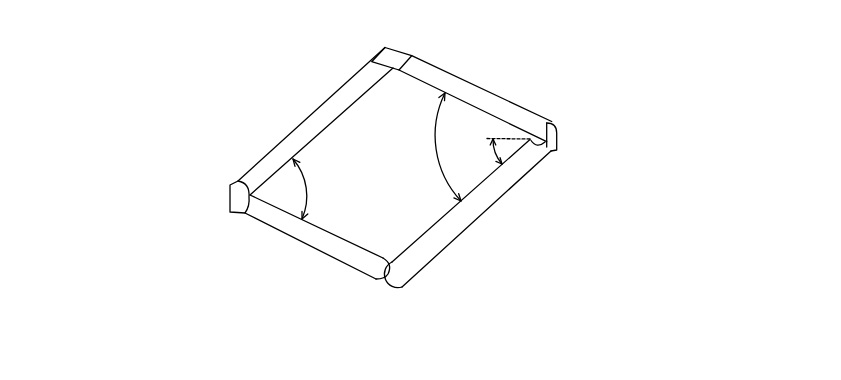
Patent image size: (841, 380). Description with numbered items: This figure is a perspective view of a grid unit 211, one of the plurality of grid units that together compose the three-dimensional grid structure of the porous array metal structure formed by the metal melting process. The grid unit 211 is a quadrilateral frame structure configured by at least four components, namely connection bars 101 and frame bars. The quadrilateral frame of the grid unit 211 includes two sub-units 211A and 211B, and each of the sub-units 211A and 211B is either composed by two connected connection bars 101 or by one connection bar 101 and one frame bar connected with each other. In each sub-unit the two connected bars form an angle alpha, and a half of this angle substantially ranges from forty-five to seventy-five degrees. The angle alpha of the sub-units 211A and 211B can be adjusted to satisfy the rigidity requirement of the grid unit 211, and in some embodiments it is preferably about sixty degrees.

The grid unit 211 is at (64, 38).
The sub-unit 211A is at (206, 140).
The sub-unit 211B is at (581, 93).
The connection bar 101 is at (523, 121).